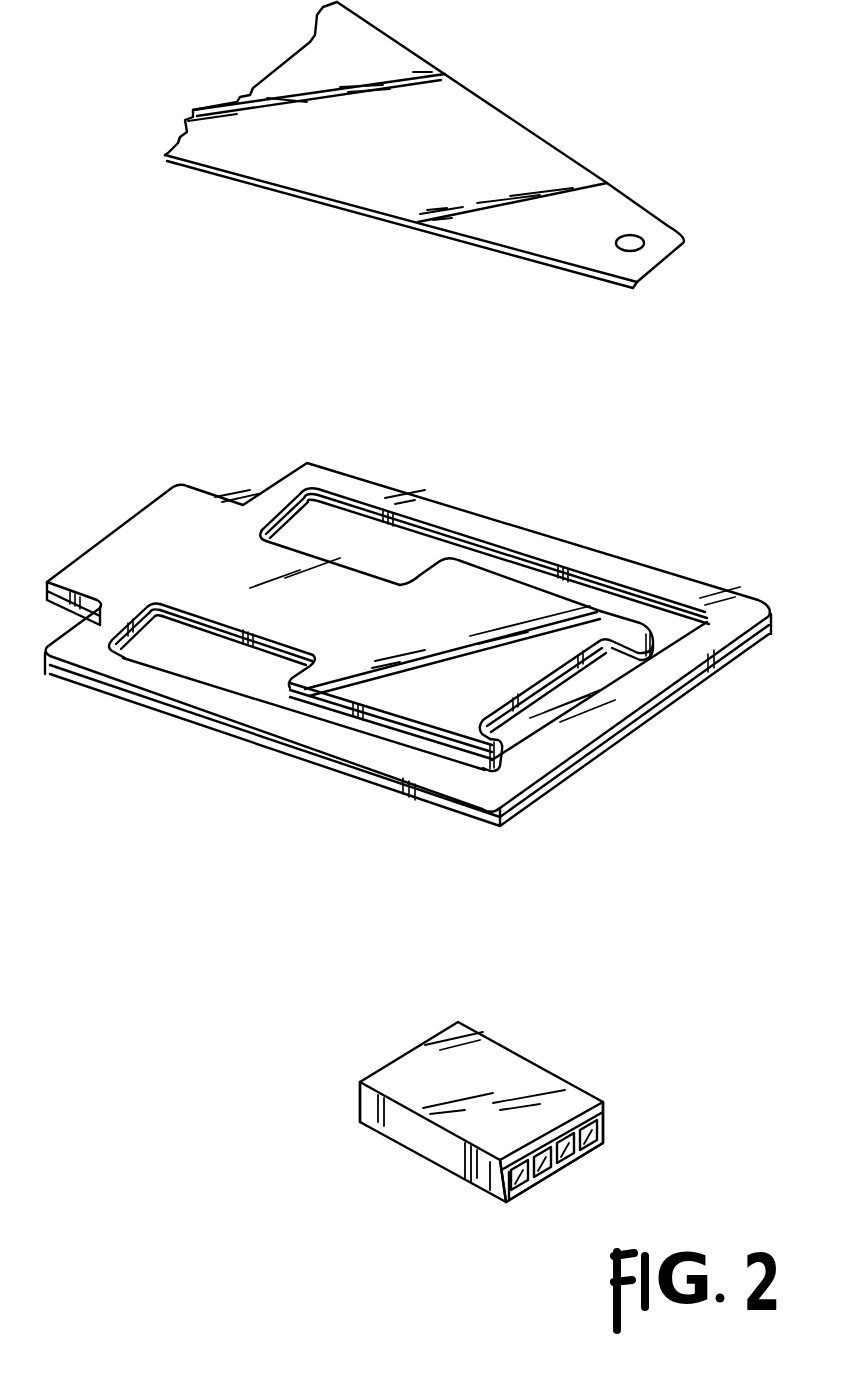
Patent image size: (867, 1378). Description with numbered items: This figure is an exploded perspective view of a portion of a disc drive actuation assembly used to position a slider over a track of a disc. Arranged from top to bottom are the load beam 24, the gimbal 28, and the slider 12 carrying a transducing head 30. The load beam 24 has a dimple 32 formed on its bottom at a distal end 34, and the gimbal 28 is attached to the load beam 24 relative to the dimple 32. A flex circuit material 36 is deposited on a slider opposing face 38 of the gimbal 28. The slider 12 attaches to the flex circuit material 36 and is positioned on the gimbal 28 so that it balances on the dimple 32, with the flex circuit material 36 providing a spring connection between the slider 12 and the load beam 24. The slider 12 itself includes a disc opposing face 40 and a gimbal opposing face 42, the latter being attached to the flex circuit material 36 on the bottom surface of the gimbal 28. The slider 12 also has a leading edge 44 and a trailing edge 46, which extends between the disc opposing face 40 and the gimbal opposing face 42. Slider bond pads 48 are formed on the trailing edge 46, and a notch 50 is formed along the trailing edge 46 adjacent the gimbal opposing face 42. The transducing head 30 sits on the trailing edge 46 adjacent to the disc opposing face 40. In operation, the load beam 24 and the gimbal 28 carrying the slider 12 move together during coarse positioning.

The slider 12 is at (487, 1117).
The load beam 24 is at (442, 162).
The gimbal 28 is at (408, 668).
The transducing head 30 is at (558, 1167).
The dimple 32 is at (641, 246).
The distal end 34 is at (580, 250).
The flex circuit material 36 is at (443, 810).
The slider opposing face 38 is at (319, 762).
The disc opposing face 40 is at (418, 1155).
The gimbal opposing face 42 is at (498, 1072).
The leading edge 44 is at (358, 1081).
The trailing edge 46 is at (607, 1118).
The slider bond pads 48 is at (575, 1158).
The notch 50 is at (603, 1106).